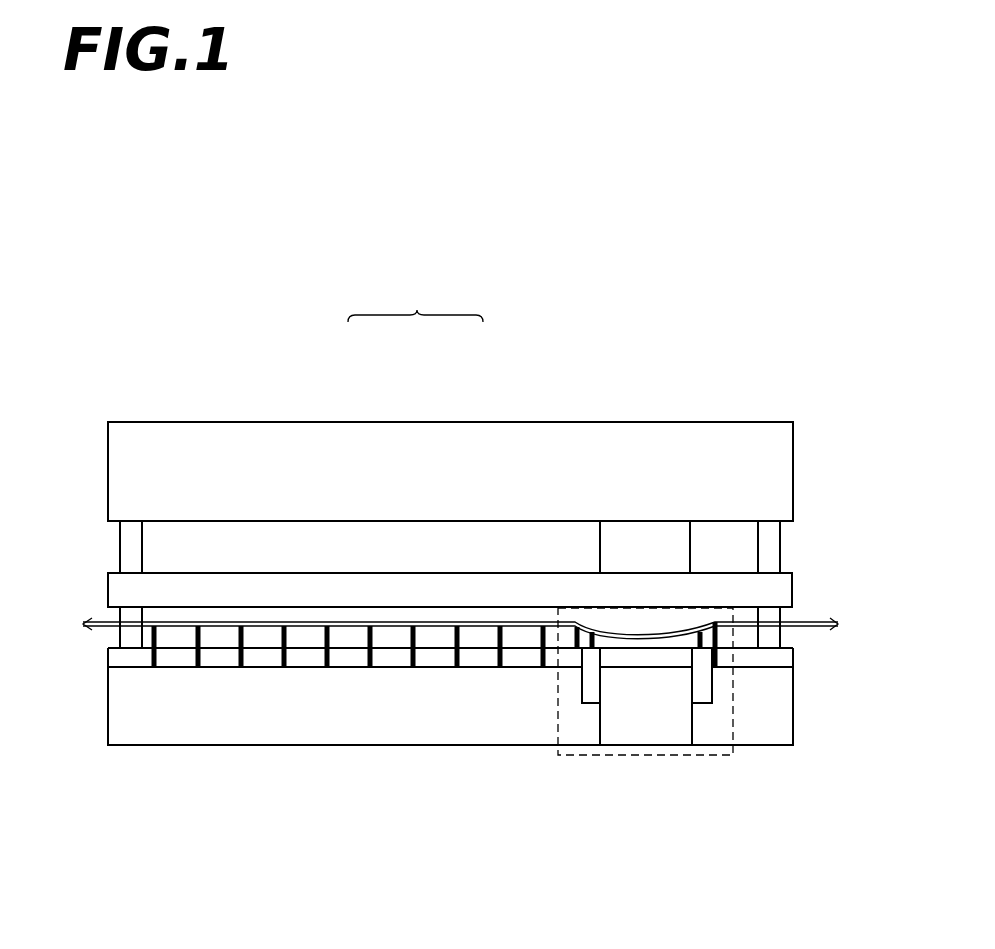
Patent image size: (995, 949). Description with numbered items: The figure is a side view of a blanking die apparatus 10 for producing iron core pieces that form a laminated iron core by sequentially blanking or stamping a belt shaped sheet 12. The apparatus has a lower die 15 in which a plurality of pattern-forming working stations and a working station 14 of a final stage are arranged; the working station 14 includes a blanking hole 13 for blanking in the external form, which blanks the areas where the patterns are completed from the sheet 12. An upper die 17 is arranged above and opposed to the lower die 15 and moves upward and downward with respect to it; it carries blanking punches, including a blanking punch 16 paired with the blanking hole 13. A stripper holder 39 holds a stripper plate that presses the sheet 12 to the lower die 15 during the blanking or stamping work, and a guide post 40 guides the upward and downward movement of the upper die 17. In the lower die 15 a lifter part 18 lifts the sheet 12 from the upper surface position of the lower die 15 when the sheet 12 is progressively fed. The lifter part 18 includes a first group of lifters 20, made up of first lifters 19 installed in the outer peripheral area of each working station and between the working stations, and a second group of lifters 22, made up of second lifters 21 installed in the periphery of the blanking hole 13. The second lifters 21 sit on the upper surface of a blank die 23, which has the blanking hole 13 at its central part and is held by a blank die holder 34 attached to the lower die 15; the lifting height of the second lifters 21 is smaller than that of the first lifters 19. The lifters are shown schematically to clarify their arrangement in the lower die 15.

The blanking die apparatus 10 is at (242, 255).
The belt shaped sheet 12 is at (97, 628).
The blanking hole for blanking in the external form 13 is at (703, 650).
The working station of a final stage 14 is at (720, 694).
The lower die 15 is at (128, 757).
The blanking punch 16 is at (623, 532).
The upper die 17 is at (798, 458).
The lifter part 18 is at (415, 297).
The first lifters 19 is at (200, 643).
The first group of lifters 20 is at (357, 610).
The second lifters 21 is at (693, 643).
The second group of lifters 22 is at (590, 612).
The blank die 23 is at (715, 618).
The blank die holder 34 is at (702, 690).
The stripper holder 39 is at (122, 590).
The guide post 40 is at (132, 545).